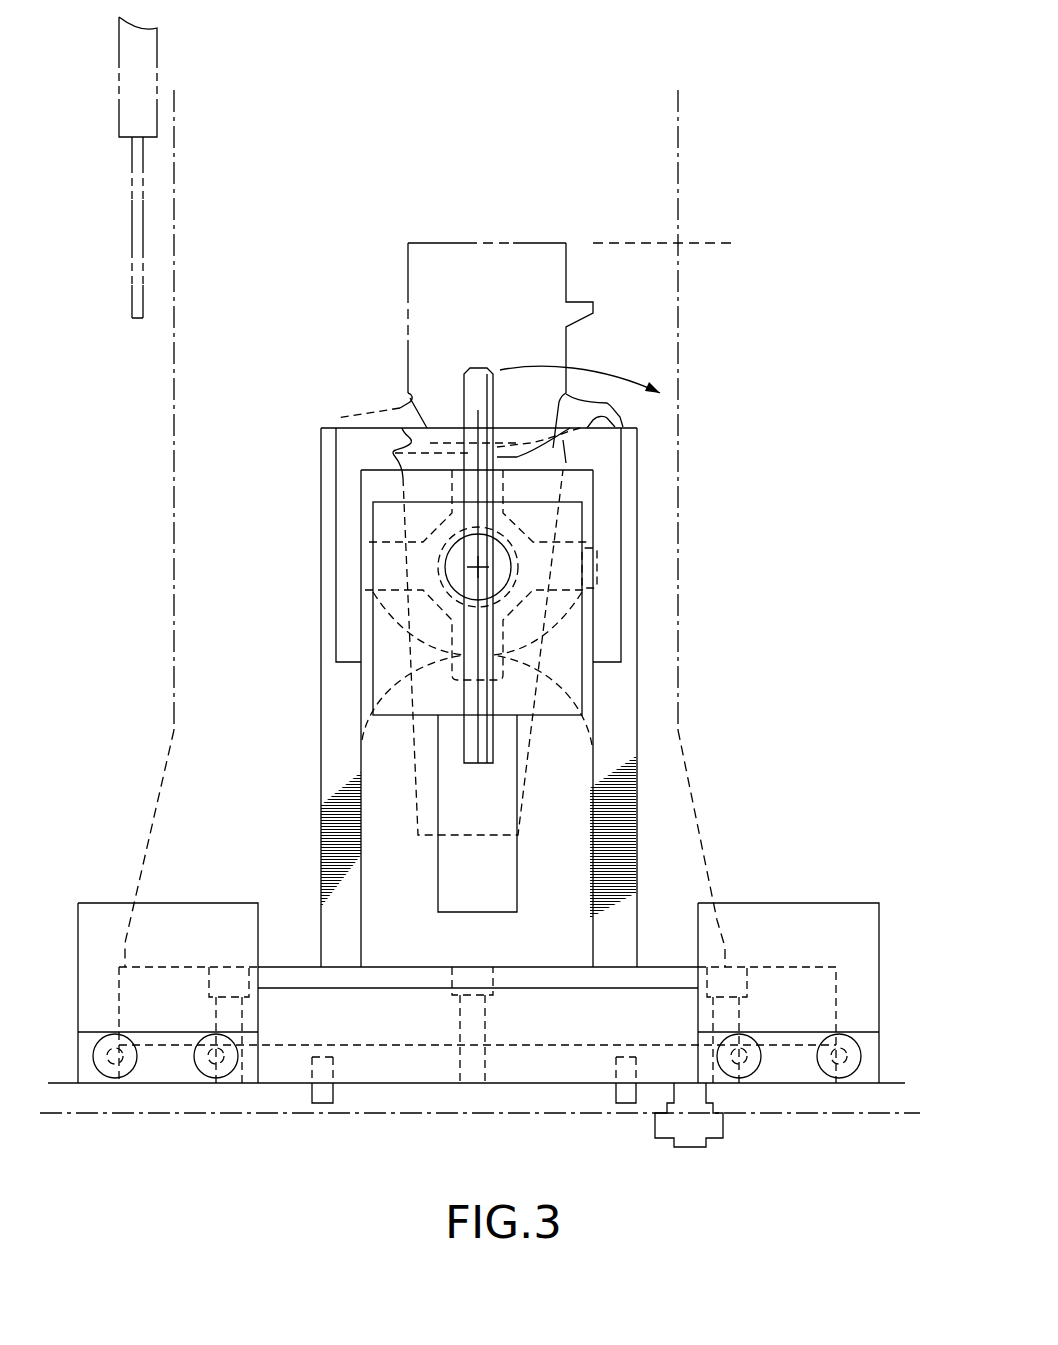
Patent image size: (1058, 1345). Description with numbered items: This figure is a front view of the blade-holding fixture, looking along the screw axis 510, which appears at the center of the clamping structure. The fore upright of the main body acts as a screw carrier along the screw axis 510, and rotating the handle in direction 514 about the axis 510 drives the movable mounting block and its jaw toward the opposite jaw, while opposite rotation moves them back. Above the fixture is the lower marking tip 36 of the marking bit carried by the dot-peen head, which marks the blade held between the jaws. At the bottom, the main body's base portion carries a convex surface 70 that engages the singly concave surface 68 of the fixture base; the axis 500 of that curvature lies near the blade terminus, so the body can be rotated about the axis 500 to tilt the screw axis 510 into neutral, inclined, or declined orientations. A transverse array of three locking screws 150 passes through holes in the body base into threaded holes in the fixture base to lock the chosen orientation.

The lower marking tip 36 is at (137, 318).
The axis of curvature 500 is at (431, 528).
The direction of handle rotation 514 is at (622, 376).
The screw axis 510 is at (478, 567).
The locking members 150 is at (227, 982).
The concave surface 68 is at (545, 1047).
The convex surface 70 is at (515, 1047).